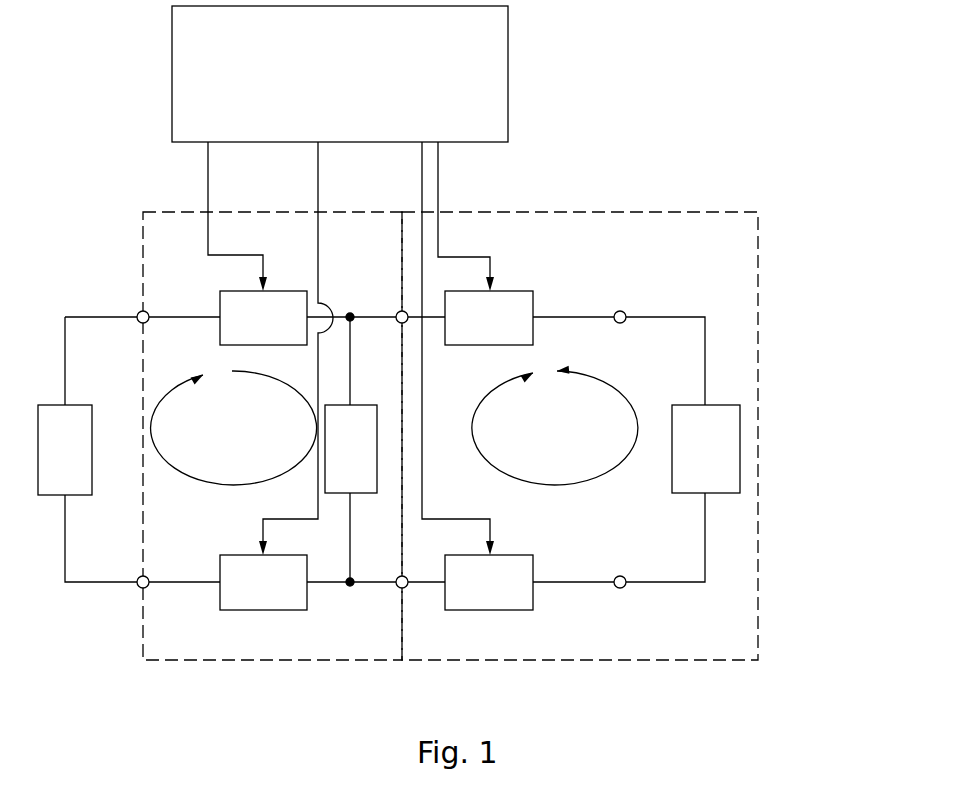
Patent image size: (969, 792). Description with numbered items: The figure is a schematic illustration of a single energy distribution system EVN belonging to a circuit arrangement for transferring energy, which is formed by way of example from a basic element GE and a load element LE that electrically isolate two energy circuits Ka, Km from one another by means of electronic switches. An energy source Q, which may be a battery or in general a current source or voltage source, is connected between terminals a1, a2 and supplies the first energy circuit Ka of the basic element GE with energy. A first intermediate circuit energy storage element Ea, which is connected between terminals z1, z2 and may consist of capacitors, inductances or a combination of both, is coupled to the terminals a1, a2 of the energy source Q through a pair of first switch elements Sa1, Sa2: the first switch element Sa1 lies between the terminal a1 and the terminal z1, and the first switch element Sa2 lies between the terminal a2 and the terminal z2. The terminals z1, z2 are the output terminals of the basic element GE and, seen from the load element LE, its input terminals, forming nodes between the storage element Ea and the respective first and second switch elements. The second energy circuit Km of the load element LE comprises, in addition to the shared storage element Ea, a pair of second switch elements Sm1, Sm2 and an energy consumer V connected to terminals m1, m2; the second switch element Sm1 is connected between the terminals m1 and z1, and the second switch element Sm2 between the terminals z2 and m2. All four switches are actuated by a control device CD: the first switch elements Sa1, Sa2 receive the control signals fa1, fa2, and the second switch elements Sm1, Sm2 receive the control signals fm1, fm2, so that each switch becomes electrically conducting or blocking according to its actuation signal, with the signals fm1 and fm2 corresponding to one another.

The control device CD is at (172, 28).
The basic element GE is at (268, 212).
The load element LE is at (597, 212).
The energy distribution system EVN is at (772, 318).
The energy source Q is at (65, 450).
The energy consumer V is at (706, 449).
The first intermediate circuit energy storage element Ea is at (351, 449).
The first switch element Sa1 is at (263, 318).
The first switch element Sa2 is at (263, 582).
The second switch element Sm1 is at (489, 318).
The second switch element Sm2 is at (489, 582).
The control signal fa1 is at (255, 216).
The control signal fa2 is at (293, 348).
The control signal fm1 is at (476, 216).
The control signal fm2 is at (468, 348).
The first energy circuit Ka is at (234, 428).
The second energy circuit Km is at (555, 425).
The terminal a1 is at (146, 311).
The terminal a2 is at (145, 588).
The terminal z1 is at (399, 311).
The terminal z2 is at (400, 588).
The terminal m1 is at (620, 311).
The terminal m2 is at (620, 588).